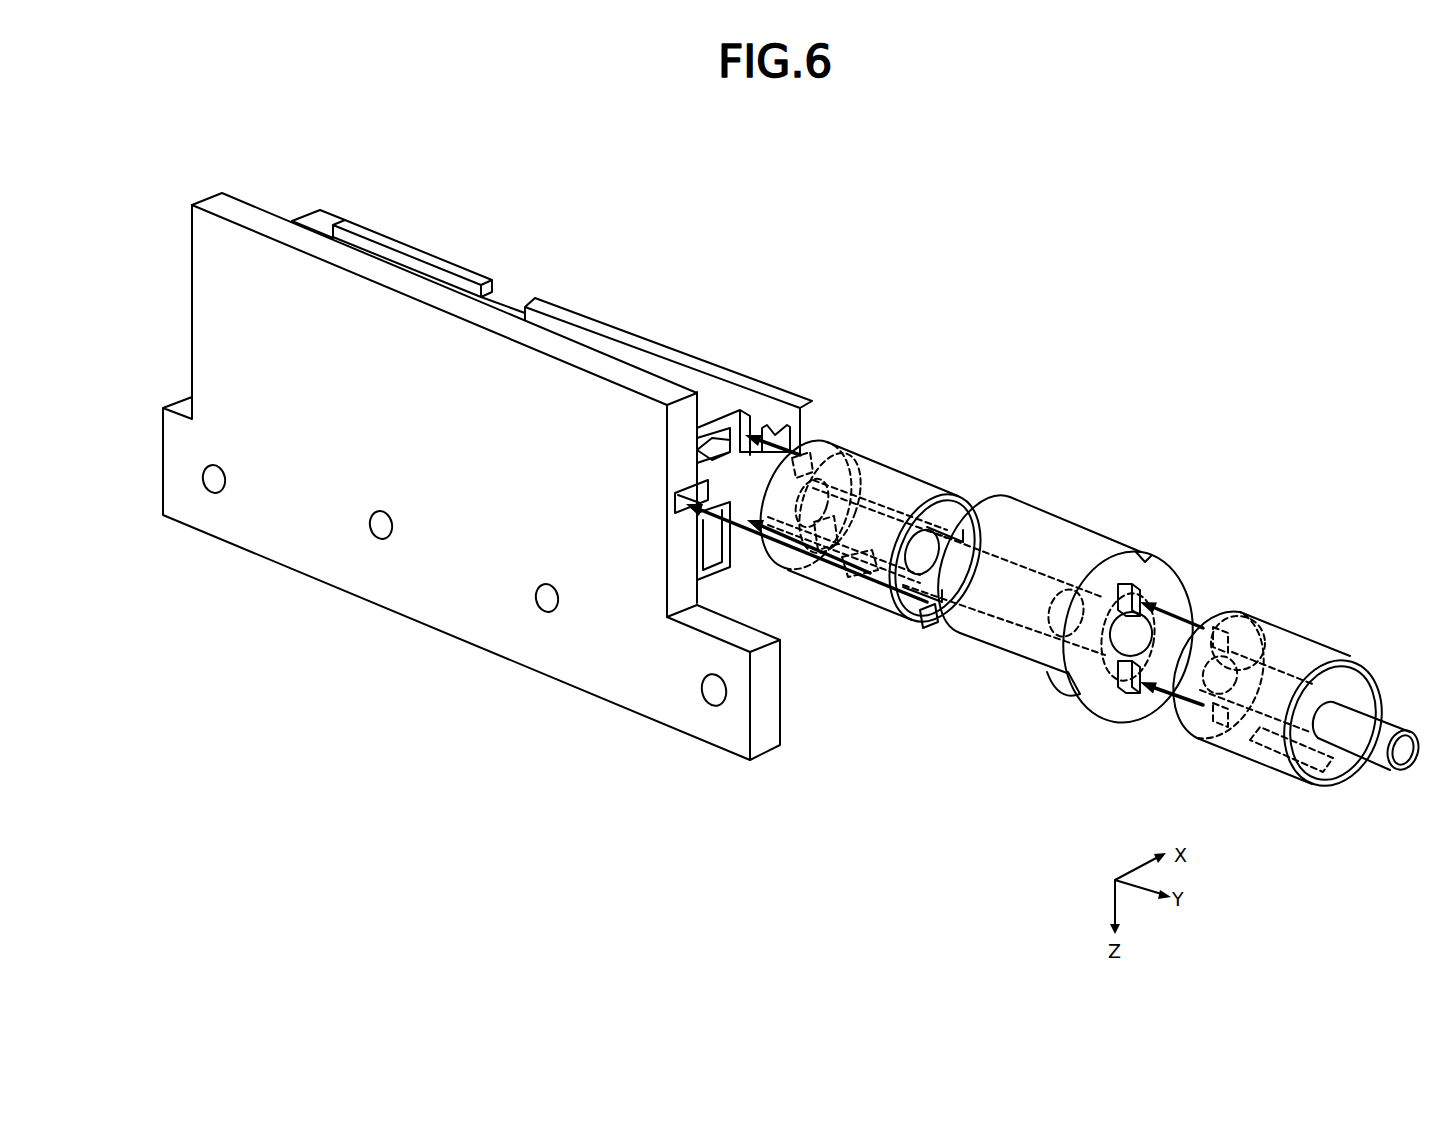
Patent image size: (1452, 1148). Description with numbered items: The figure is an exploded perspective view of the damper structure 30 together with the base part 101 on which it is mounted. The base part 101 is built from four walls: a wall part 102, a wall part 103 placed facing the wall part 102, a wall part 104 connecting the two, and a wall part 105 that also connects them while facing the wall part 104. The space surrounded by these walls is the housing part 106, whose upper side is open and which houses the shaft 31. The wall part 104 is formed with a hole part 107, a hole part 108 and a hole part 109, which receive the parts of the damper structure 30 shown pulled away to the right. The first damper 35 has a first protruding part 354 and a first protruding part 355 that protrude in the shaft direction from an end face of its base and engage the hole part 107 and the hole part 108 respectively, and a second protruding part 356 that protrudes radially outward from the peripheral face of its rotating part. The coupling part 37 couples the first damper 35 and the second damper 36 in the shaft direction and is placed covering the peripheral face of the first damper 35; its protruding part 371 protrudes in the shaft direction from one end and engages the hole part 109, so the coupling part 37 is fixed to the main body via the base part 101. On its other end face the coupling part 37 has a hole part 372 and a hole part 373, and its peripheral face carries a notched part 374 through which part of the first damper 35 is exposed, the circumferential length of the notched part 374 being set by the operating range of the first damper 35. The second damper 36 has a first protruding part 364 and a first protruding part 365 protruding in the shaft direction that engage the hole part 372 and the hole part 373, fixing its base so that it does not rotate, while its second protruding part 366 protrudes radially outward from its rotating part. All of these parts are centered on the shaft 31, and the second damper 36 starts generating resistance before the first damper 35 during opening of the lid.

The base part 101 is at (201, 173).
The wall part 102 is at (290, 540).
The wall part 103 is at (415, 245).
The wall part 104 is at (700, 405).
The wall part 105 is at (315, 212).
The housing part 106 is at (611, 346).
The hole part 107 is at (760, 428).
The hole part 108 is at (742, 570).
The hole part 109 is at (680, 492).
The damper structure 30 is at (1048, 384).
The first damper 35 is at (880, 470).
The first protruding part 354 is at (813, 460).
The first protruding part 355 is at (815, 575).
The second protruding part 356 is at (855, 592).
The coupling part 37 is at (1062, 538).
The protruding part 371 is at (932, 630).
The hole part 372 is at (1150, 580).
The hole part 373 is at (1130, 685).
The notched part 374 is at (976, 652).
The second damper 36 is at (1315, 655).
The first protruding part 364 is at (1245, 610).
The first protruding part 365 is at (1195, 740).
The second protruding part 366 is at (1268, 760).
The shaft 31 is at (1375, 745).